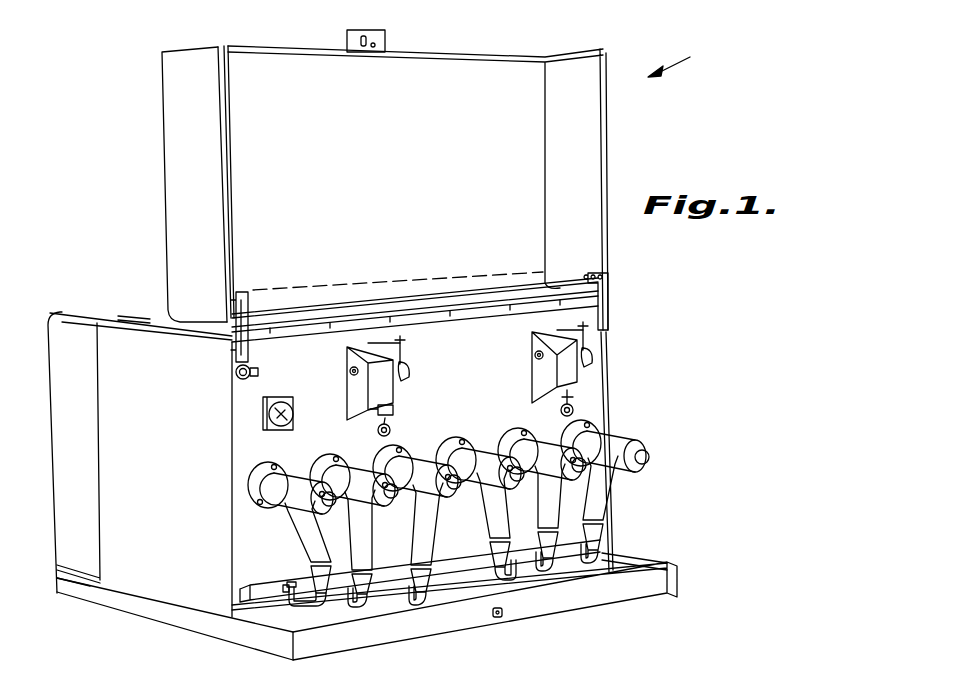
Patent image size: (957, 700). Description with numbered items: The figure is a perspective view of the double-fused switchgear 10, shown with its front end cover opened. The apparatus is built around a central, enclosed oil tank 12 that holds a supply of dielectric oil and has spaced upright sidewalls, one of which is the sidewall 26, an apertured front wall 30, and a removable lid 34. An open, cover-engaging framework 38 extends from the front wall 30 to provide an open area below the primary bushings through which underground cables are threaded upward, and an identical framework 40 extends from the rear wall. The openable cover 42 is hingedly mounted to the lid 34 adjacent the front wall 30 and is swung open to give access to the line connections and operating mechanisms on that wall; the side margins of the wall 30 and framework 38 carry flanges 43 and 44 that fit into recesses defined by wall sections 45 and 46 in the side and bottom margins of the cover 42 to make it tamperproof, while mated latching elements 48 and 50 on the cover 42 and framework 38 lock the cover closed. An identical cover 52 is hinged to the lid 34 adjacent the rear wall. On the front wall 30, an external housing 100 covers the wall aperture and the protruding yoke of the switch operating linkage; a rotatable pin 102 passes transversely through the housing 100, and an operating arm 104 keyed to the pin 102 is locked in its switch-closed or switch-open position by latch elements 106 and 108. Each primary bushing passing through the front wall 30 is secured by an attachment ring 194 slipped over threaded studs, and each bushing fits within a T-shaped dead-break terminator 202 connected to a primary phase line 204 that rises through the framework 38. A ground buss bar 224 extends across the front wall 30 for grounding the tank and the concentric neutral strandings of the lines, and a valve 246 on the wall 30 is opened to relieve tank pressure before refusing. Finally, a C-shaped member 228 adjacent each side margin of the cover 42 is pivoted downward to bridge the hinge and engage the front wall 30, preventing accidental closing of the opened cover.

The switchgear 10 is at (683, 57).
The oil tank 12 is at (146, 630).
The sidewall 26 is at (128, 460).
The front wall 30 is at (468, 330).
The lid 34 is at (167, 318).
The framework 38 is at (660, 590).
The framework 40 is at (70, 583).
The cover 42 is at (165, 107).
The flange 43 is at (230, 497).
The flange 44 is at (638, 558).
The wall section 45 is at (233, 166).
The wall section 46 is at (301, 53).
The latching element 48 is at (383, 32).
The latching element 50 is at (500, 618).
The cover 52 is at (48, 385).
The housing 100 is at (352, 397).
The pin 102 is at (351, 371).
The operating arm 104 is at (391, 430).
The latch element 106 is at (395, 410).
The latch element 108 is at (405, 350).
The attachment ring 194 is at (283, 470).
The dead-break terminator 202 is at (323, 589).
The primary phase line 204 is at (335, 608).
The ground buss bar 224 is at (455, 563).
The C-shaped member 228 is at (248, 296).
The valve 246 is at (253, 372).